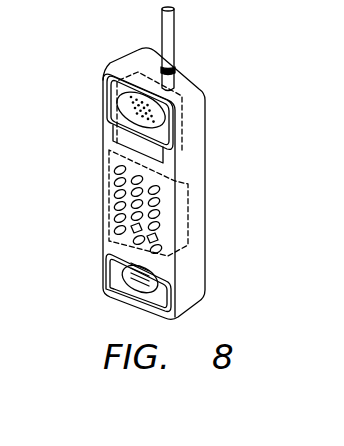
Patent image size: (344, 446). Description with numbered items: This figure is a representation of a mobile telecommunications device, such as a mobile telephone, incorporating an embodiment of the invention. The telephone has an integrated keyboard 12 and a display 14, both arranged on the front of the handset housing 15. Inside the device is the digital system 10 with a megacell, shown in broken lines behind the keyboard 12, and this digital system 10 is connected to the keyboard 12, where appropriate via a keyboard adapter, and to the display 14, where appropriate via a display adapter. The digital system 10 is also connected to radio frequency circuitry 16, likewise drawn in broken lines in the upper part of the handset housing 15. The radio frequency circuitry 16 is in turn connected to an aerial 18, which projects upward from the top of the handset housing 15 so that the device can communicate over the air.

The digital system 10 is at (190, 214).
The keyboard 12 is at (116, 200).
The display 14 is at (112, 137).
The housing 15 is at (204, 284).
The radio frequency (RF) circuitry 16 is at (190, 127).
The aerial 18 is at (175, 31).